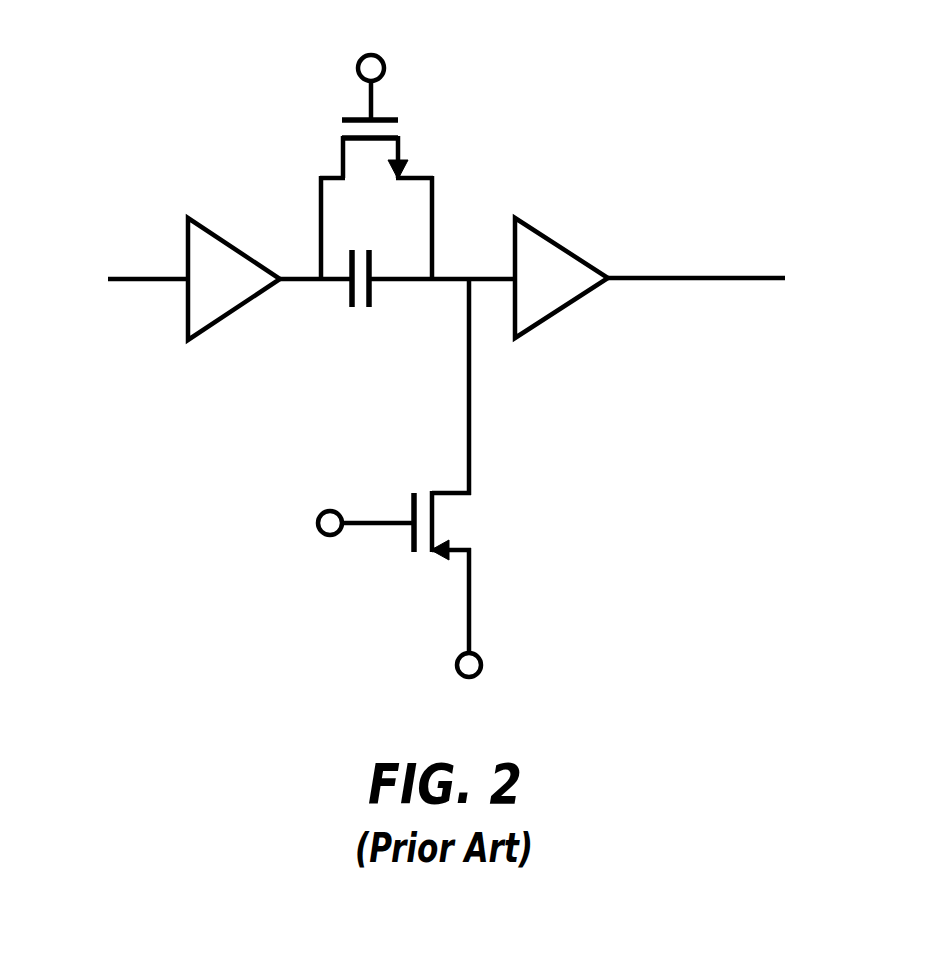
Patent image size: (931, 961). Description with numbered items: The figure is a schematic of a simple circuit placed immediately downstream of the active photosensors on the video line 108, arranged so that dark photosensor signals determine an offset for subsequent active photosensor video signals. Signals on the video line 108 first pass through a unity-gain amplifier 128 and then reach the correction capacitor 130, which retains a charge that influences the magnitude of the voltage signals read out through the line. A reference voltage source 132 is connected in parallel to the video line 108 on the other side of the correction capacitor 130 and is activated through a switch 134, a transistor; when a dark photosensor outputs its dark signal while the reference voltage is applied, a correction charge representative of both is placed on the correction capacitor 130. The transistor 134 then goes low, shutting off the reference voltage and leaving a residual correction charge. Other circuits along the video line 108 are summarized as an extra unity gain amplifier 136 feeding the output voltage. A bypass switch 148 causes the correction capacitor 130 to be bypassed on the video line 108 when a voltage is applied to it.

The video line 108 is at (143, 277).
The unity-gain amplifier 128 is at (243, 249).
The correction capacitor 130 is at (348, 286).
The bypass switch 148 is at (380, 117).
The unity gain amplifier 136 is at (542, 235).
The switch 134 is at (453, 497).
The reference voltage source 132 is at (483, 663).